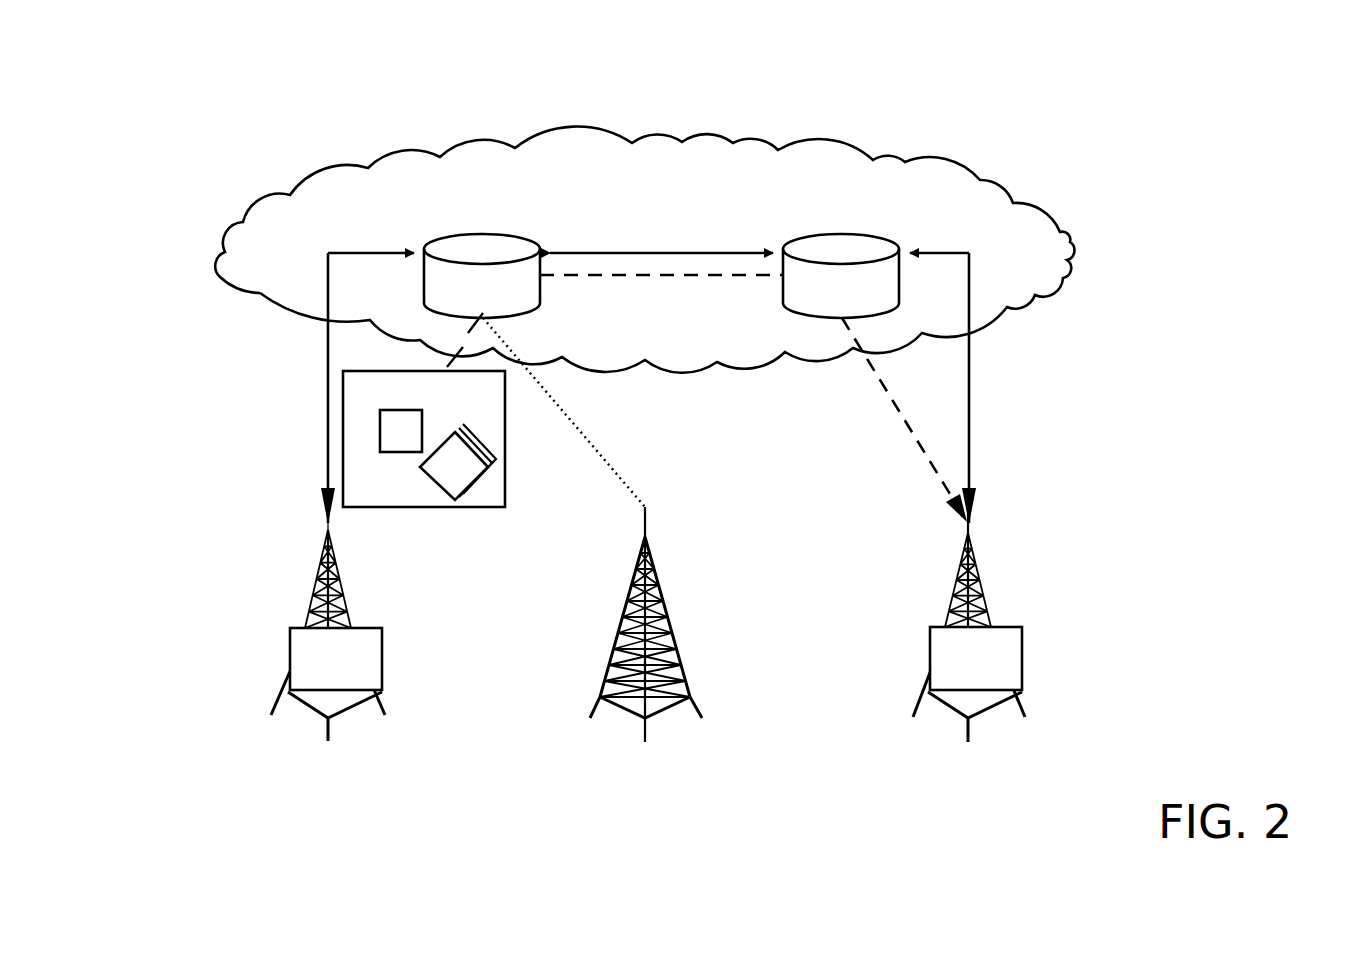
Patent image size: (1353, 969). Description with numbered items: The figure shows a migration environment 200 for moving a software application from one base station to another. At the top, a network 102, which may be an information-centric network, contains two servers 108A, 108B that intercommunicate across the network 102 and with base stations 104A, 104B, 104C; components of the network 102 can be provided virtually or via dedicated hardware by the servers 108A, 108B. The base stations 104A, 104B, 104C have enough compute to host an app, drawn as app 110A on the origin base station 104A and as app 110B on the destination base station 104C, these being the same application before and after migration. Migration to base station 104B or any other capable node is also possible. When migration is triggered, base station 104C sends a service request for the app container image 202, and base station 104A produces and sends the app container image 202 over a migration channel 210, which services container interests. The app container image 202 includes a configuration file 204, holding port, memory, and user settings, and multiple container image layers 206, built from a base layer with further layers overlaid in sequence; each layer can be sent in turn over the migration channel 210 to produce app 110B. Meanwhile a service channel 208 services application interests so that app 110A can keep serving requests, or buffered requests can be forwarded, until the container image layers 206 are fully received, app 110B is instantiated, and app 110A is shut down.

The migration environment 200 is at (240, 143).
The network 102 is at (890, 151).
The server 108A is at (461, 310).
The server 108B is at (820, 310).
The app container image 202 is at (390, 493).
The configuration file 204 is at (380, 418).
The container image layers 206 is at (502, 468).
The service channel 208 is at (975, 465).
The migration channel 210 is at (892, 403).
The base station 104A is at (340, 632).
The base station 104B is at (668, 617).
The base station 104C is at (982, 623).
The app 110A is at (314, 683).
The app 110B is at (954, 683).